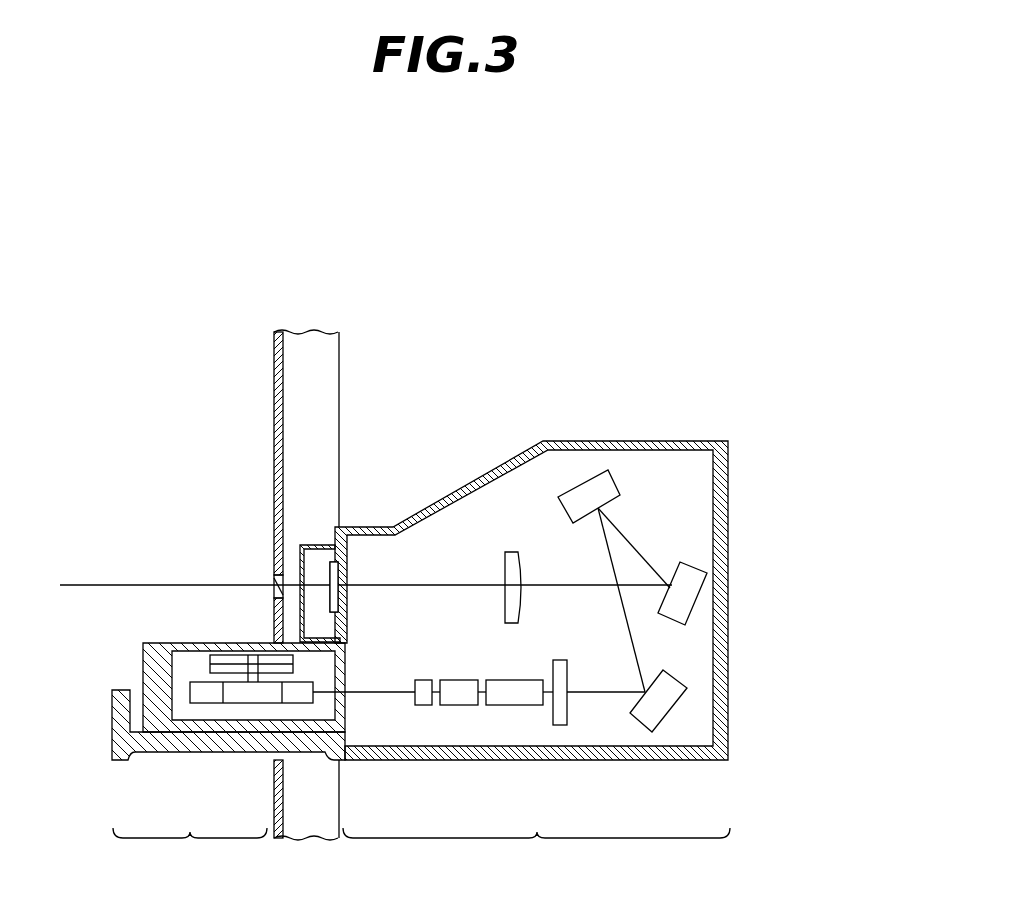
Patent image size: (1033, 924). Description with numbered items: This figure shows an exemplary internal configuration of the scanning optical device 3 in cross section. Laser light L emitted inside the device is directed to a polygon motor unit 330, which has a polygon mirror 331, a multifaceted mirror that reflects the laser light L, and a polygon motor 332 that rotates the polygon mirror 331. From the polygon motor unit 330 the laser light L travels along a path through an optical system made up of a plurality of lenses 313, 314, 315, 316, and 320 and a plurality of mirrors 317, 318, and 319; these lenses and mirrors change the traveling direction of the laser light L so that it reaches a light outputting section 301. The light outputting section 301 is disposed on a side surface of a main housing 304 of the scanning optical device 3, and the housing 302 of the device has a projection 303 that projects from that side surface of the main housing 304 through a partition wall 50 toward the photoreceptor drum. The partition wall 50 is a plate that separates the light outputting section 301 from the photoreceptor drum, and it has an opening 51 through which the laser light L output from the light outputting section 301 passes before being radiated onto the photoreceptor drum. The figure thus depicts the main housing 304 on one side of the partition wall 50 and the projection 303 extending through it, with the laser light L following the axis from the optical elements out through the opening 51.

The scanning optical device 3 is at (742, 363).
The laser light L is at (142, 583).
The partition wall 50 is at (275, 525).
The opening 51 is at (275, 578).
The light outputting section 301 is at (293, 577).
The housing 302 is at (663, 445).
The projection 303 is at (174, 873).
The main housing 304 is at (542, 873).
The lens 313 is at (423, 697).
The lens 314 is at (460, 697).
The lens 315 is at (512, 697).
The lens 316 is at (561, 724).
The mirror 317 is at (662, 712).
The mirror 318 is at (595, 483).
The mirror 319 is at (690, 584).
The lens 320 is at (510, 556).
The polygon motor unit 330 is at (148, 668).
The polygon mirror 331 is at (241, 703).
The polygon motor 332 is at (225, 665).